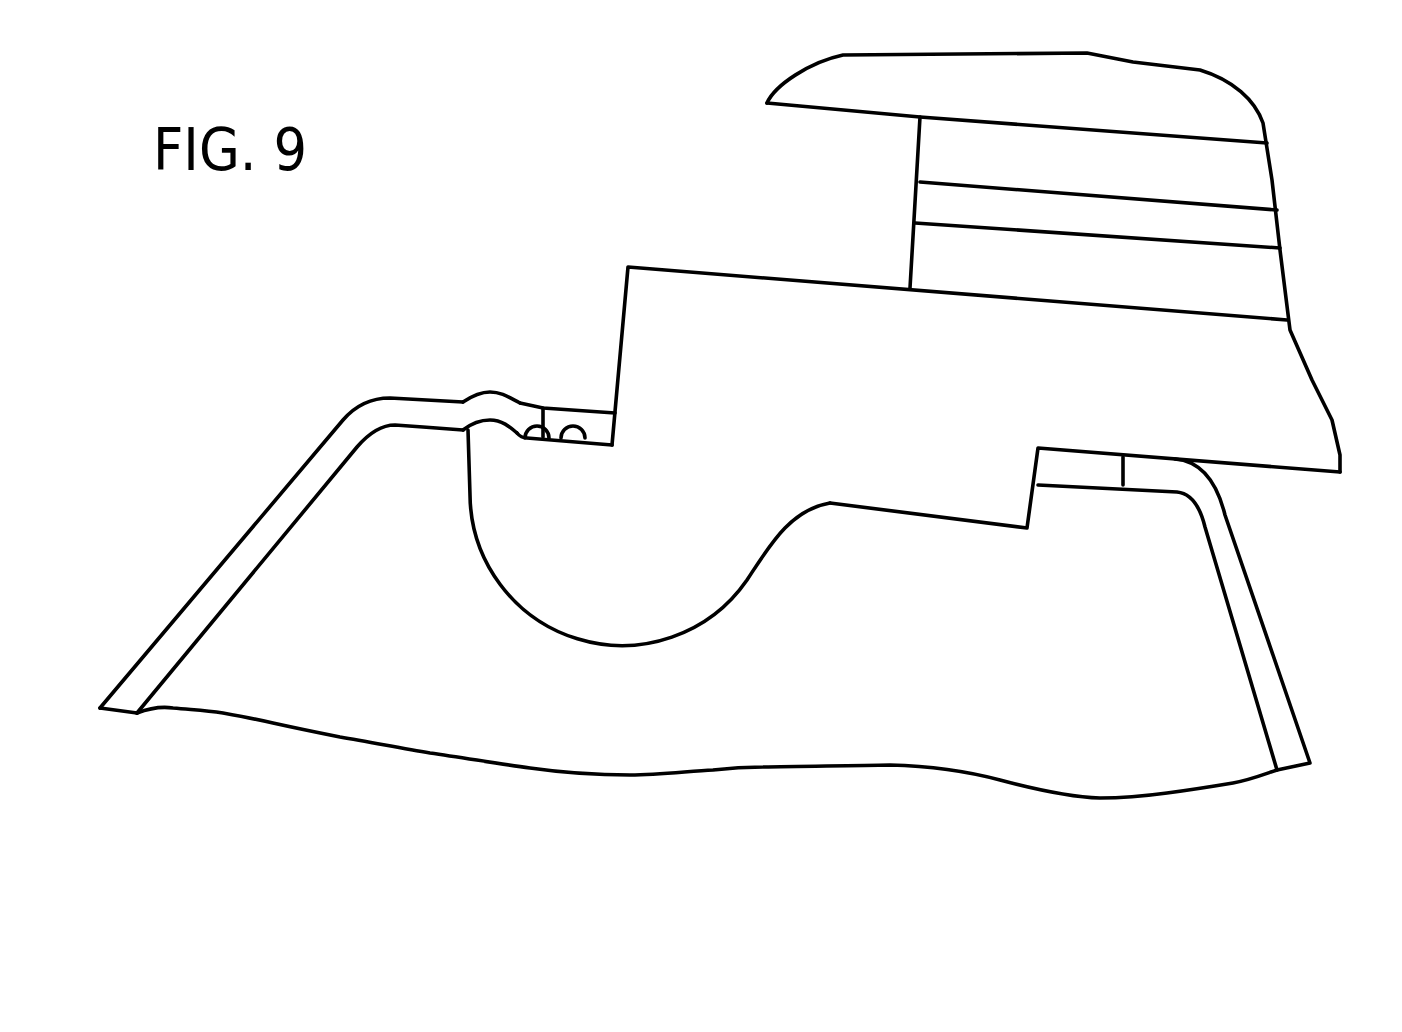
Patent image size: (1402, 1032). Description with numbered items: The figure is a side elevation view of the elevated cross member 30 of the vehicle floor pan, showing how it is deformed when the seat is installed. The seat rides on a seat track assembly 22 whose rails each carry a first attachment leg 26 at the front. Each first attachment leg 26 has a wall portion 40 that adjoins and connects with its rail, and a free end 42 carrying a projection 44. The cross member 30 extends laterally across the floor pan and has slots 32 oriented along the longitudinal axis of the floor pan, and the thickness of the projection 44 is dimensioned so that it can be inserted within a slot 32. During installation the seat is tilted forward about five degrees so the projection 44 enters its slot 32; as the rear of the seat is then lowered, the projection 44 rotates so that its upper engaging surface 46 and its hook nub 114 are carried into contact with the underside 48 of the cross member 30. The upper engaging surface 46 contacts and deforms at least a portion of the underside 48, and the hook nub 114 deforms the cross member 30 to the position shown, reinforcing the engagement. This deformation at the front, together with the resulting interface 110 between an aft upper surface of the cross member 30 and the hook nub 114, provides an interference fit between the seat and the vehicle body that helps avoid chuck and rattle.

The seat track assembly 22 is at (512, 147).
The first attachment leg 26 is at (675, 598).
The cross member 30 is at (1267, 683).
The slot 32 is at (597, 427).
The wall portion 40 is at (1108, 356).
The free end 42 is at (763, 318).
The projection 44 is at (527, 610).
The upper engaging surface 46 is at (585, 447).
The underside 48 is at (466, 430).
The interface 110 is at (548, 447).
The hook nub 114 is at (467, 403).